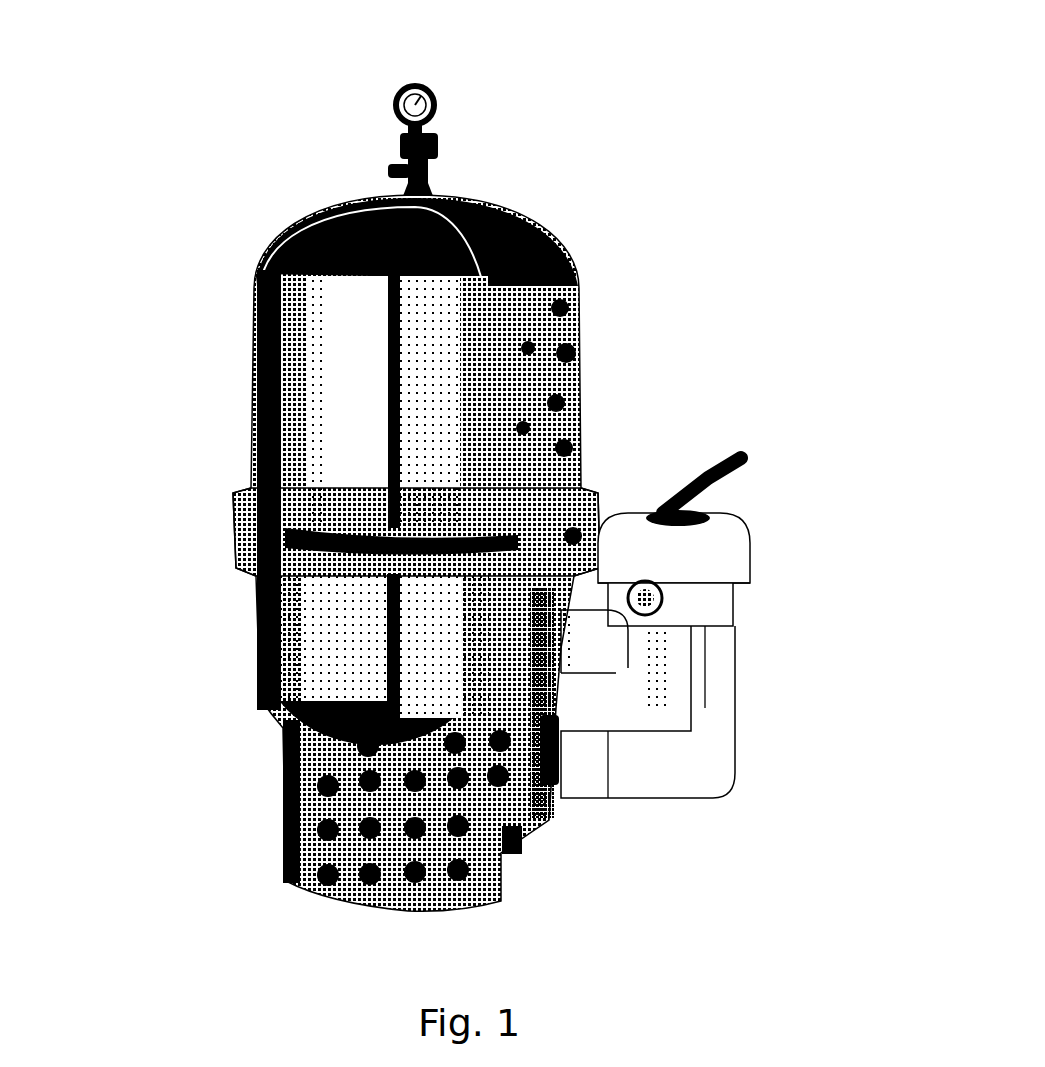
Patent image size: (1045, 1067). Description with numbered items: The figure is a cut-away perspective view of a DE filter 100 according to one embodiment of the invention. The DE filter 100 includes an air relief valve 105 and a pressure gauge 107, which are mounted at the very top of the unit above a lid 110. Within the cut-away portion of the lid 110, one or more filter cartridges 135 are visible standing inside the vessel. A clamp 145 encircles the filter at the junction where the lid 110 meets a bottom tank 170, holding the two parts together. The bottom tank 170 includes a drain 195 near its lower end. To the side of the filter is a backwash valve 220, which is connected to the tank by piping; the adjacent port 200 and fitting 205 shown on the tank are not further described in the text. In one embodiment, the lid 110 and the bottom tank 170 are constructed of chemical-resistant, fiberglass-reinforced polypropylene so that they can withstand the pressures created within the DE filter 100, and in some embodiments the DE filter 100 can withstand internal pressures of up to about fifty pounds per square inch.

The DE filter 100 is at (494, 499).
The air relief valve 105 is at (434, 132).
The pressure gauge 107 is at (424, 80).
The lid 110 is at (545, 340).
The filter cartridges 135 is at (307, 403).
The clamp 145 is at (243, 517).
The bottom tank 170 is at (498, 680).
The drain 195 is at (520, 840).
The inlet port 200 is at (563, 648).
The outlet fitting 205 is at (555, 752).
The backwash valve 220 is at (757, 503).